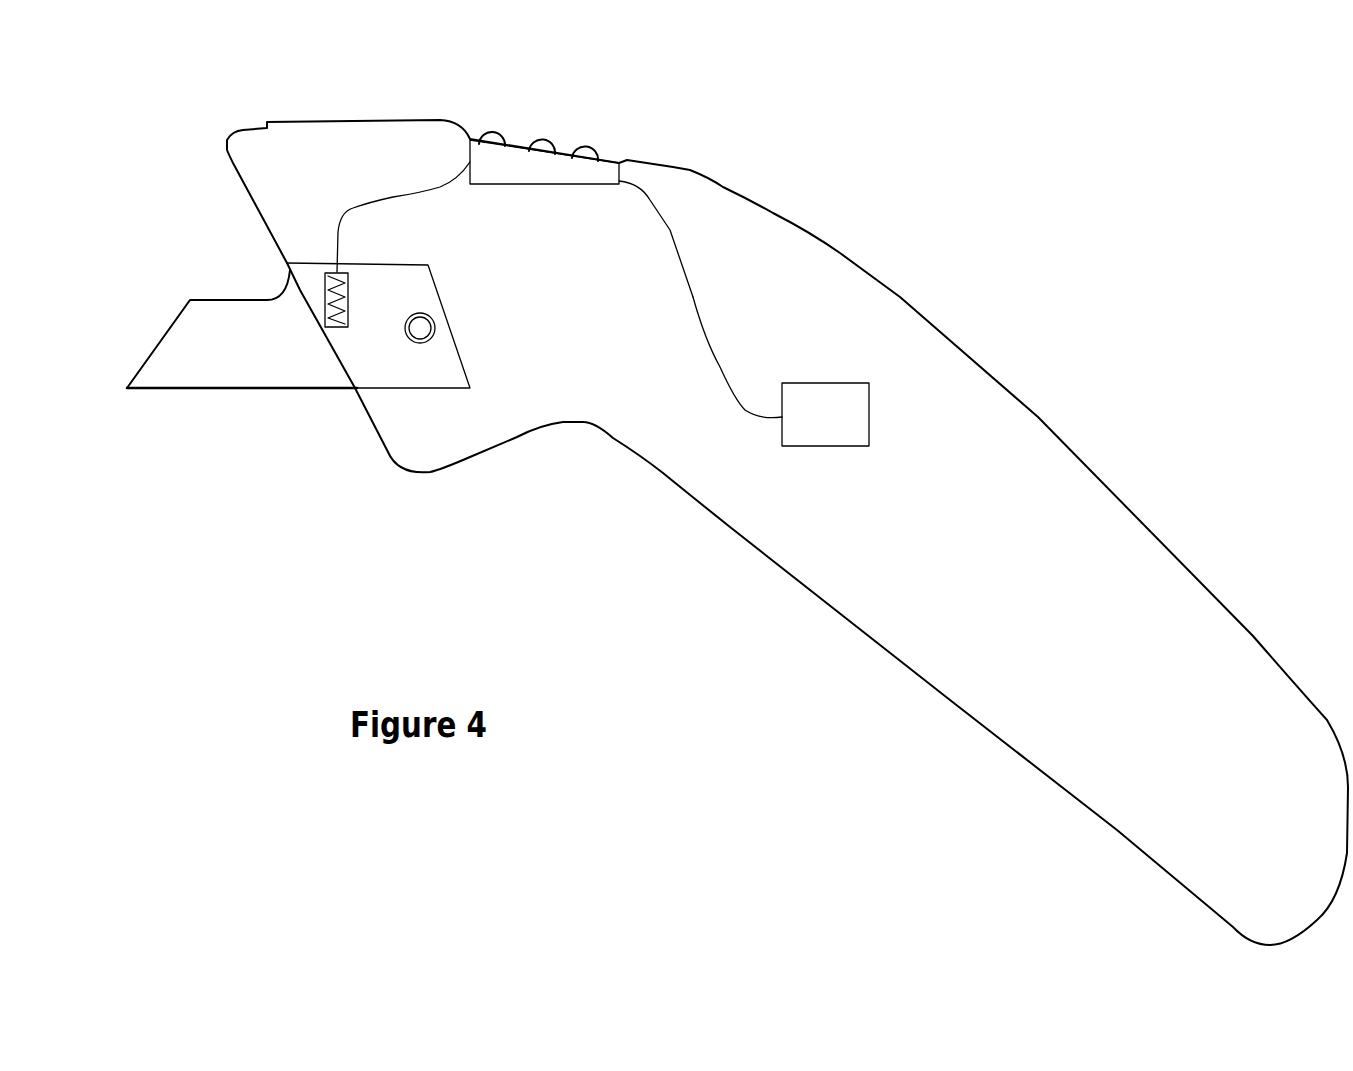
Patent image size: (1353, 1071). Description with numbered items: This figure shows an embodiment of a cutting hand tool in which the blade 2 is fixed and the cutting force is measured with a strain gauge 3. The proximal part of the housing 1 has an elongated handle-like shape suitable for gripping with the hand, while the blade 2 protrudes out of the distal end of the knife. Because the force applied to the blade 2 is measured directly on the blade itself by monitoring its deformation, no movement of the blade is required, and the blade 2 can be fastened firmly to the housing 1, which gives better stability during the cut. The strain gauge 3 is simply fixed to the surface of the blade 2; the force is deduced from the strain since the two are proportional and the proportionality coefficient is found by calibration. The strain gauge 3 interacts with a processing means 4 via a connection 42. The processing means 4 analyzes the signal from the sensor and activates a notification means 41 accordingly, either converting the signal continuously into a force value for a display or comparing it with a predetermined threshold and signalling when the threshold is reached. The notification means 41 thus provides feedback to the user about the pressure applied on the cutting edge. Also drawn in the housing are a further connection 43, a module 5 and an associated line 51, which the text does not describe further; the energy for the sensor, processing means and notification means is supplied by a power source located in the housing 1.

The housing 1 is at (1000, 473).
The blade 2 is at (223, 332).
The strain gauge 3 is at (337, 277).
The processing means 4 is at (593, 172).
The notification means 41 is at (540, 125).
The connection 42 is at (385, 195).
The second wire 43 is at (673, 223).
The power module 5 is at (852, 407).
The power wire 51 is at (723, 380).